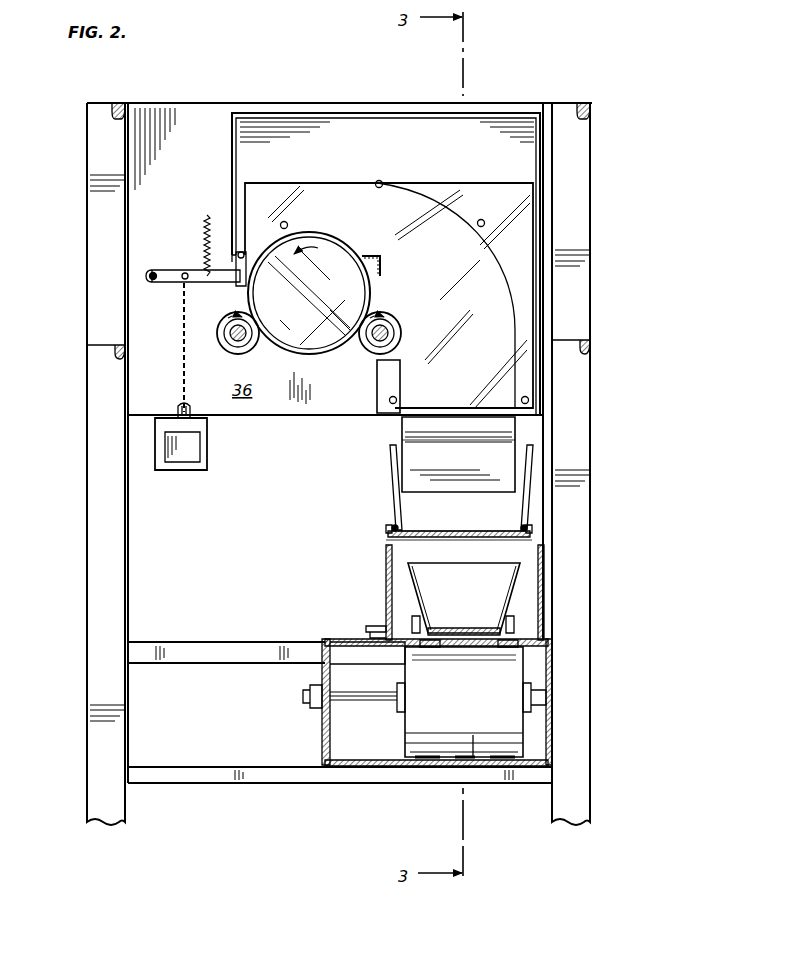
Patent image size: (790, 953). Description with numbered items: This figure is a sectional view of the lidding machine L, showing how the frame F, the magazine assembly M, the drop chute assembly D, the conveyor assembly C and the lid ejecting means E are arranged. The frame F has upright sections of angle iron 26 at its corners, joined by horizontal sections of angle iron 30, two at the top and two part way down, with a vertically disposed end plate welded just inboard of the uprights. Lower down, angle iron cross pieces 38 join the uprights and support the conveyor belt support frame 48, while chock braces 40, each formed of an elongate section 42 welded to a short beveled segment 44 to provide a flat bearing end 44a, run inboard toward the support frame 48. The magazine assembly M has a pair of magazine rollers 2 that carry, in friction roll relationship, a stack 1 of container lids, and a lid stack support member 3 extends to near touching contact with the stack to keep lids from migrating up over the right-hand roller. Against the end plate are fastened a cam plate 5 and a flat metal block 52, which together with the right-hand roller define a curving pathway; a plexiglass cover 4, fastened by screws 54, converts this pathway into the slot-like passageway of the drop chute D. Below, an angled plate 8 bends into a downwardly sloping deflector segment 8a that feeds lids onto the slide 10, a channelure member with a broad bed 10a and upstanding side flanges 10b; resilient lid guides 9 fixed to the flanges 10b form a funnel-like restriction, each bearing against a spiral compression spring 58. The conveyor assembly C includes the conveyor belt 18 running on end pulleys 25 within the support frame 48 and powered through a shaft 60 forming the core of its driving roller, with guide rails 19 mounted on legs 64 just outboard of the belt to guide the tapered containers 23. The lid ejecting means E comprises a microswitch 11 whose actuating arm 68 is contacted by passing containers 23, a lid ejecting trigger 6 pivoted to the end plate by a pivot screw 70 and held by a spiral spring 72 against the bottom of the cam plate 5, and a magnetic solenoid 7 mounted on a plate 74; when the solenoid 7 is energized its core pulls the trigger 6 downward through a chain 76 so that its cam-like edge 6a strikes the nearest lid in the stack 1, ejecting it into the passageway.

The stack of container lids 1 is at (318, 338).
The magazine rollers 2 is at (236, 352).
The lid stack support member 3 is at (374, 258).
The plexiglass cover 4 is at (389, 296).
The cam plate 5 is at (386, 264).
The lid ejecting trigger 6 is at (172, 283).
The cam-like outer edge 6a is at (247, 274).
The magnetic solenoid 7 is at (190, 452).
The angled plate 8 is at (398, 429).
The deflector segment 8a is at (458, 453).
The lid guides 9 is at (388, 534).
The slide 10 is at (540, 500).
The bed 10a is at (460, 516).
The side flanges 10b is at (389, 455).
The microswitch 11 is at (384, 624).
The conveyor belt 18 is at (473, 755).
The guide rails 19 is at (424, 622).
The containers 23 is at (464, 598).
The end pulleys 25 is at (464, 702).
The upright angle iron sections 26 is at (336, 257).
The horizontal angle iron sections 30 is at (105, 106).
The angle iron cross pieces 38 is at (226, 784).
The chock braces 40 is at (212, 640).
The elongate section 42 is at (206, 665).
The short beveled segment 44 is at (320, 658).
The flat bearing end 44a is at (332, 655).
The conveyor belt support frame 48 is at (552, 670).
The flat metal block 52 is at (377, 393).
The screws 54 is at (286, 223).
The spiral compression spring 58 is at (393, 528).
The shaft 60 is at (382, 700).
The legs 64 is at (432, 646).
The actuating arm 68 is at (368, 634).
The pivot screw 70 is at (153, 272).
The spiral spring 72 is at (205, 231).
The plate 74 is at (186, 470).
The chain 76 is at (182, 380).
The conveyor assembly C is at (405, 797).
The drop chute assembly D is at (383, 166).
The lid ejecting means E is at (175, 340).
The frame F is at (80, 525).
The lidding machine L is at (630, 172).
The magazine assembly M is at (283, 368).